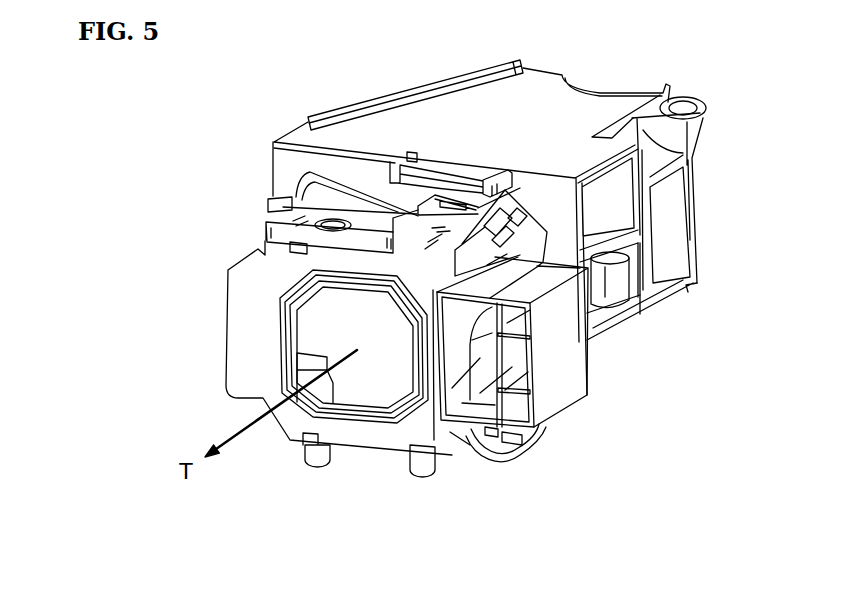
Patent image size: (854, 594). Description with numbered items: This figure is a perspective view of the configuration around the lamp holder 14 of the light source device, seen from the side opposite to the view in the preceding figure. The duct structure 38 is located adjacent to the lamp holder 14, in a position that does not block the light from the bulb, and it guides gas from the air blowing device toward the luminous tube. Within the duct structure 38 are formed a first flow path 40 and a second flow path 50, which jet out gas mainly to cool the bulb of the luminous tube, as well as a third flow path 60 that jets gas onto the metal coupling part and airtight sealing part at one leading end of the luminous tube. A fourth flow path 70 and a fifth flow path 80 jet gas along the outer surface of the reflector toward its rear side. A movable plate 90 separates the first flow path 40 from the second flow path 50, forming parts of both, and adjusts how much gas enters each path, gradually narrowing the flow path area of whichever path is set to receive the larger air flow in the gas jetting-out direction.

The lamp holder 14 is at (460, 112).
The duct structure 38 is at (565, 350).
The first flow path 40 is at (462, 330).
The second flow path 50 is at (483, 408).
The third flow path 60 is at (520, 368).
The fourth flow path 70 is at (518, 322).
The fifth flow path 80 is at (533, 423).
The movable plate 90 is at (473, 363).